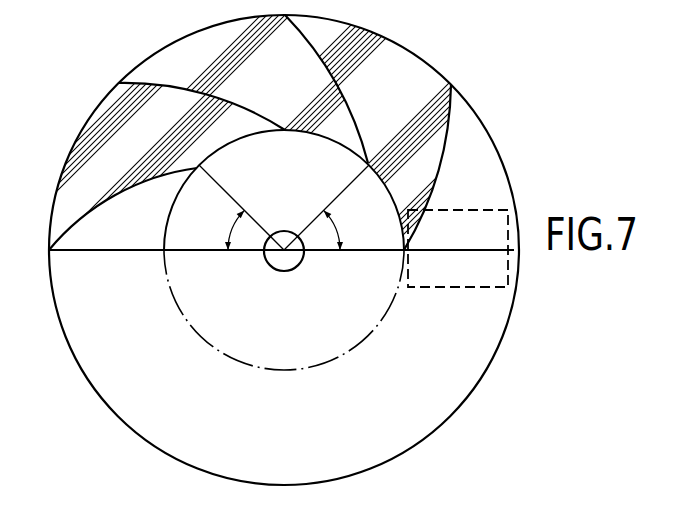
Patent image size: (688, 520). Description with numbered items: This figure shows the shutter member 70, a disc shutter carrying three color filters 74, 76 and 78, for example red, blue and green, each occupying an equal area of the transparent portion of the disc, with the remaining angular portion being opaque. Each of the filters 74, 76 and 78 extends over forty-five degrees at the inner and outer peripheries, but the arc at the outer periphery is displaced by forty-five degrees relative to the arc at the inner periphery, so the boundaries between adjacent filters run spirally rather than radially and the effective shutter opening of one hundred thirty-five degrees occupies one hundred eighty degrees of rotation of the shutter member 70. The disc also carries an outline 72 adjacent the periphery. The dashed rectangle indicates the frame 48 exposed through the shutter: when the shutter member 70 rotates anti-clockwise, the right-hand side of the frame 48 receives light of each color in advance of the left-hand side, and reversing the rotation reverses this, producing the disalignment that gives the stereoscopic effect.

The shutter member 70 is at (455, 385).
The disc body 72 is at (112, 385).
The filter 74 is at (103, 106).
The filter 76 is at (190, 42).
The filter 78 is at (401, 66).
The frame 48 is at (506, 210).